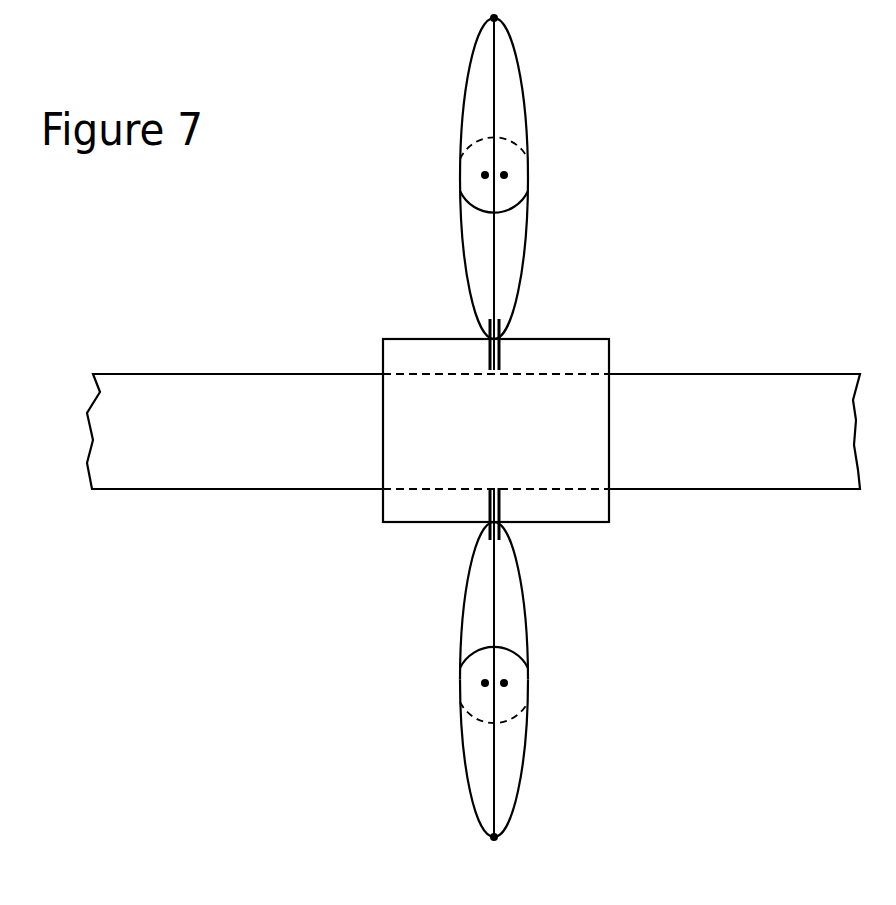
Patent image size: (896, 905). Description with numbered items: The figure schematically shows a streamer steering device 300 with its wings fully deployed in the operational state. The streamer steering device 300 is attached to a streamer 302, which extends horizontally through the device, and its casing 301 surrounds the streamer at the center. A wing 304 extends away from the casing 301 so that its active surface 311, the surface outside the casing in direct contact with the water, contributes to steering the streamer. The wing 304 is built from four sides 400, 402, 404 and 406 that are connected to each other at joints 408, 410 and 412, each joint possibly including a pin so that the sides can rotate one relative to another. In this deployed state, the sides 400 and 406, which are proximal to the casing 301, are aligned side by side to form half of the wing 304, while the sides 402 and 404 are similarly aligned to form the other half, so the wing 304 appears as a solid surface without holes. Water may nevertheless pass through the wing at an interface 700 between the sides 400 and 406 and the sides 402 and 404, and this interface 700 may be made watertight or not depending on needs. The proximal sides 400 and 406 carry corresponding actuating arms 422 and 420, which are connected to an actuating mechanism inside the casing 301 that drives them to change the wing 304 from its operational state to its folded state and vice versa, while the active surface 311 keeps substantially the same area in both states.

The streamer steering device 300 is at (539, 406).
The casing 301 is at (600, 522).
The streamer 302 is at (789, 463).
The wing 304 is at (532, 677).
The active surface 311 is at (463, 246).
The side 400 is at (481, 596).
The side 402 is at (478, 742).
The side 404 is at (518, 750).
The side 406 is at (504, 596).
The joint 408 is at (485, 680).
The joint 410 is at (497, 838).
The joint 412 is at (505, 680).
The actuating arm 420 is at (502, 512).
The actuating arm 422 is at (489, 514).
The interface 700 is at (494, 700).